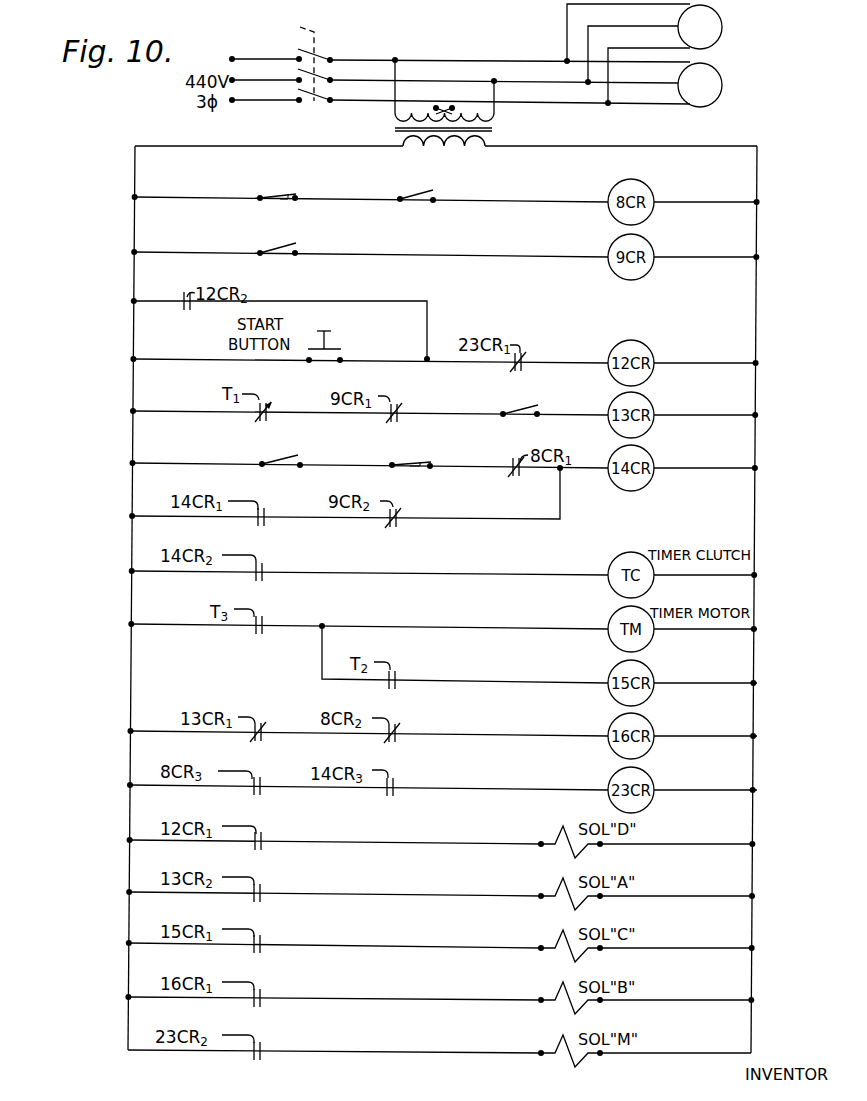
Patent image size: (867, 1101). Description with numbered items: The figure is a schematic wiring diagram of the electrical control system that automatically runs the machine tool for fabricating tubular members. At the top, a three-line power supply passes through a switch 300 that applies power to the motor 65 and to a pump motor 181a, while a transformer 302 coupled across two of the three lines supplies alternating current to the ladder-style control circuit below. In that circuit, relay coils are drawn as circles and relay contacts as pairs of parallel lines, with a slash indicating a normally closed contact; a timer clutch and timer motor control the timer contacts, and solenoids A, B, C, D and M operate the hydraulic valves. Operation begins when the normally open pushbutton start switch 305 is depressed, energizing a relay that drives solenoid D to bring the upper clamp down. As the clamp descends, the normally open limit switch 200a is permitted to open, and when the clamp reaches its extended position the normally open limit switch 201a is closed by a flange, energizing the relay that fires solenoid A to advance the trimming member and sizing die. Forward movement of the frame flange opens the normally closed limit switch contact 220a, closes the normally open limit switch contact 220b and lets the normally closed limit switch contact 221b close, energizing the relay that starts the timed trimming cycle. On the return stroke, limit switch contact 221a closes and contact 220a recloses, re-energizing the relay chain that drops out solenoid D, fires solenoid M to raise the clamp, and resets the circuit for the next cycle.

The switch 300 is at (331, 49).
The transformer 302 is at (498, 131).
The motor 65 is at (722, 30).
The pump motor 181a is at (722, 88).
The pushbutton start switch 305 is at (334, 346).
The limit switch contact 220a is at (274, 190).
The limit switch contact 221a is at (427, 190).
The limit switch 200a is at (278, 242).
The limit switch 201a is at (516, 408).
The limit switch contact 220b is at (271, 459).
The limit switch contact 221b is at (418, 458).